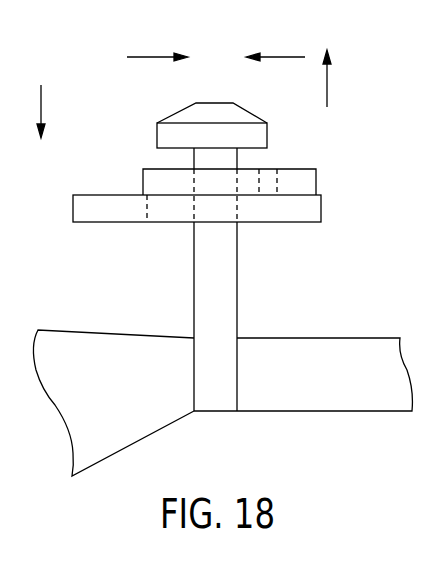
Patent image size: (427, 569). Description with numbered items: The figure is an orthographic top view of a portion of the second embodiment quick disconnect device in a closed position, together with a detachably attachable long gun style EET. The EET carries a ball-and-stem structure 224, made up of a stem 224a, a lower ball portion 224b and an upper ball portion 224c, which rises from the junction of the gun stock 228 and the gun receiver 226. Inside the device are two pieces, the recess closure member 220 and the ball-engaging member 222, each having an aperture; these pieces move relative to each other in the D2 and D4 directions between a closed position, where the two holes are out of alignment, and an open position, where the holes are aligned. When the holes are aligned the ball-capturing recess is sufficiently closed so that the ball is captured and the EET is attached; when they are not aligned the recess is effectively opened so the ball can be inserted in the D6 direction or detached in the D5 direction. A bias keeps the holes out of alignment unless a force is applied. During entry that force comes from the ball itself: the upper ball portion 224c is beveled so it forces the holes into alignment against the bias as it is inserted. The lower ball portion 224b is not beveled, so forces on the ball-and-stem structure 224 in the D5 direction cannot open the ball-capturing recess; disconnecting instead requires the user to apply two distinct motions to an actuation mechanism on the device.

The recess closure member 220 is at (322, 206).
The ball-engaging member 222 is at (317, 180).
The ball-and-stem structure 224 is at (213, 413).
The stem 224a is at (238, 264).
The lower ball portion 224b is at (157, 133).
The upper ball portion 224c is at (249, 112).
The gun receiver 226 is at (322, 338).
The gun stock 228 is at (92, 330).
The D2 direction D2 is at (152, 57).
The D4 direction D4 is at (277, 57).
The D5 direction D5 is at (43, 110).
The D6 direction D6 is at (329, 90).